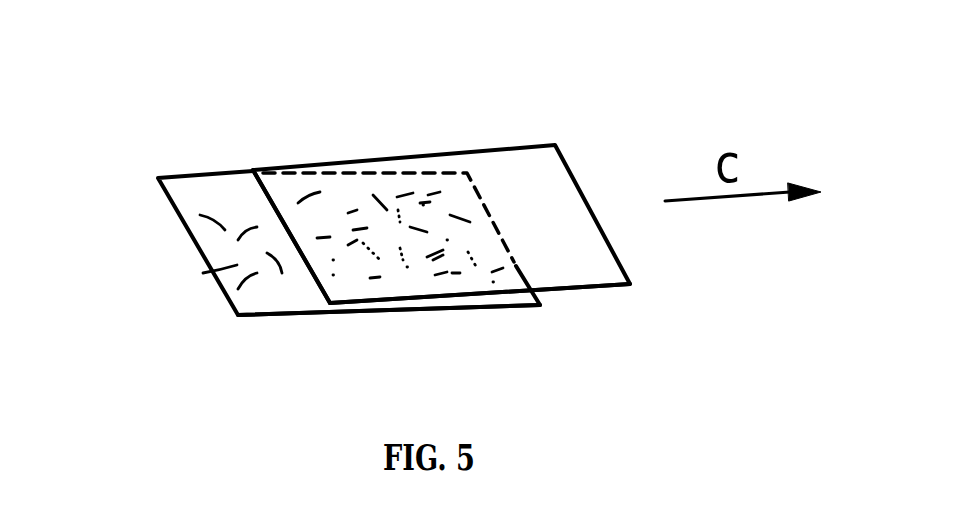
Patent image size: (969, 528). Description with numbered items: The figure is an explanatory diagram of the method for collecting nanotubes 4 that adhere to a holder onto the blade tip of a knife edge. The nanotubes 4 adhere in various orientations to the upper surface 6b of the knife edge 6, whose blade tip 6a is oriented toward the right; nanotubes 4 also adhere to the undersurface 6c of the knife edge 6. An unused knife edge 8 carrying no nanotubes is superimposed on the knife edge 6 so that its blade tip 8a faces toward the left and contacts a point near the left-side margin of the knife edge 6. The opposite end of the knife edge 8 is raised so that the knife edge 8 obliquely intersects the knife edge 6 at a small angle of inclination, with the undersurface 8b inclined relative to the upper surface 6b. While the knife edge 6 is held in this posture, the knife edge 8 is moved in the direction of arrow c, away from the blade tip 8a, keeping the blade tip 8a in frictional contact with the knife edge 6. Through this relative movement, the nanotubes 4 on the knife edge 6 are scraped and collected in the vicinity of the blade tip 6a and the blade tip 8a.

The nanotubes 4 is at (383, 247).
The knife edge 6 is at (238, 265).
The blade tip 6a is at (494, 222).
The upper surface 6b is at (237, 210).
The undersurface 6c is at (455, 308).
The knife edge 8 is at (565, 247).
The blade tip 8a is at (300, 247).
The undersurface 8b is at (565, 290).